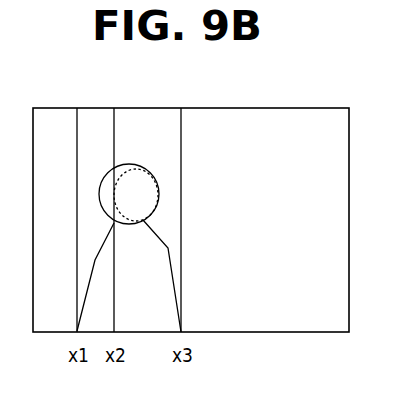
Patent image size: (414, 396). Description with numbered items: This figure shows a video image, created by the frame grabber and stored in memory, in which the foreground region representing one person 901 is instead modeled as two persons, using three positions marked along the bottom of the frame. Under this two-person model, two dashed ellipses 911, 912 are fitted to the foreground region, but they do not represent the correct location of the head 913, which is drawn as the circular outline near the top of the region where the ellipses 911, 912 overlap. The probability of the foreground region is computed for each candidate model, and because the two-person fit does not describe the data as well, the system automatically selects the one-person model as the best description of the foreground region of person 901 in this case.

The person 901 is at (158, 118).
The dashed ellipse 911 is at (110, 177).
The dashed ellipse 912 is at (127, 167).
The head 913 is at (158, 192).